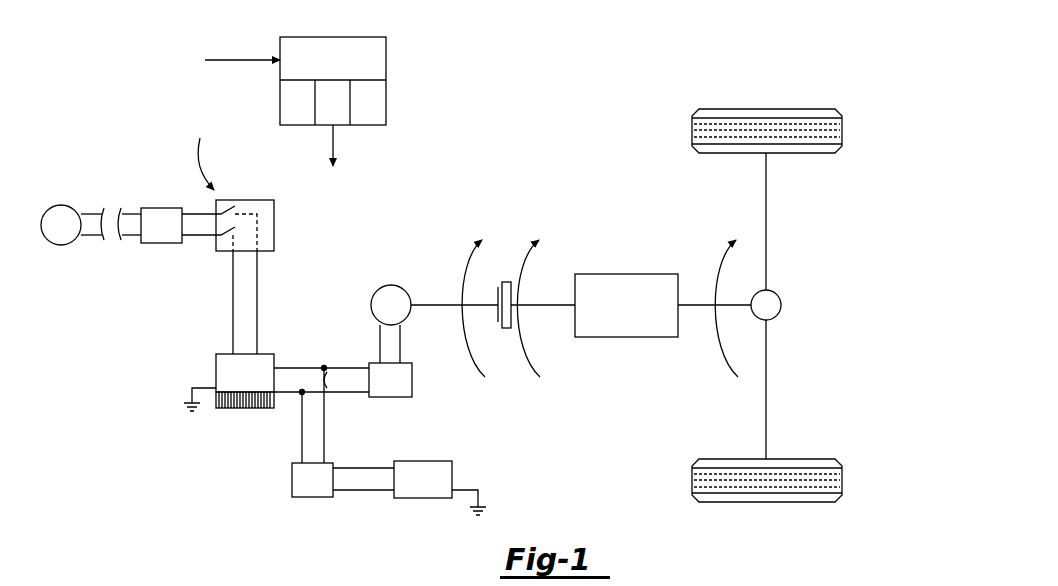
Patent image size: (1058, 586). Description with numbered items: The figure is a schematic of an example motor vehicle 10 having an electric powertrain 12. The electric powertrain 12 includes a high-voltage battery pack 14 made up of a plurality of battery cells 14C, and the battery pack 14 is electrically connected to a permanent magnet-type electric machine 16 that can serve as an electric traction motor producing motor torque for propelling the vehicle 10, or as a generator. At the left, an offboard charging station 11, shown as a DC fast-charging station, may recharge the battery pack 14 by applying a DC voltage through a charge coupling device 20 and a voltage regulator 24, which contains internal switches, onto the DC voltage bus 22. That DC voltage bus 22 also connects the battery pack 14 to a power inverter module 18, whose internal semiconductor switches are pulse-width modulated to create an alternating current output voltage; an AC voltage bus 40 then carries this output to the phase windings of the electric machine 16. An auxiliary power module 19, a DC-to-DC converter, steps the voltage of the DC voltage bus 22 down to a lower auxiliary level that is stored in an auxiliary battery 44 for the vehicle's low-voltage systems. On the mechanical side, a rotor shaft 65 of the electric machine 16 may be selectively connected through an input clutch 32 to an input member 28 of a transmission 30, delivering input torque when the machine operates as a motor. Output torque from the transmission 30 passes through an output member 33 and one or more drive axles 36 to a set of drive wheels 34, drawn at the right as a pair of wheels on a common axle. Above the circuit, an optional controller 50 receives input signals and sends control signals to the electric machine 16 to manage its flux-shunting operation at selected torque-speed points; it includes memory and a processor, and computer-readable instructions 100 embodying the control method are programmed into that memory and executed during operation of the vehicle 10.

The motor vehicle 10 is at (690, 46).
The offboard charging station 11 is at (61, 205).
The electric powertrain 12 is at (447, 203).
The high-voltage battery pack 14 is at (272, 404).
The battery cells 14C is at (242, 410).
The permanent magnet-type electric machine 16 is at (393, 285).
The power inverter module 18 is at (412, 380).
The auxiliary power module 19 is at (312, 498).
The charge coupling device 20 is at (162, 207).
The DC voltage bus 22 is at (257, 302).
The voltage regulator 24 is at (245, 199).
The input member 28 is at (553, 305).
The transmission 30 is at (628, 274).
The input clutch 32 is at (507, 271).
The output member 33 is at (697, 305).
The drive wheels 34 is at (692, 132).
The drive axles 36 is at (766, 245).
The AC voltage bus 40 is at (400, 345).
The auxiliary battery 44 is at (452, 470).
The controller 50 is at (333, 81).
The rotor shaft 65 is at (425, 305).
The computer-readable instructions 100 is at (297, 103).